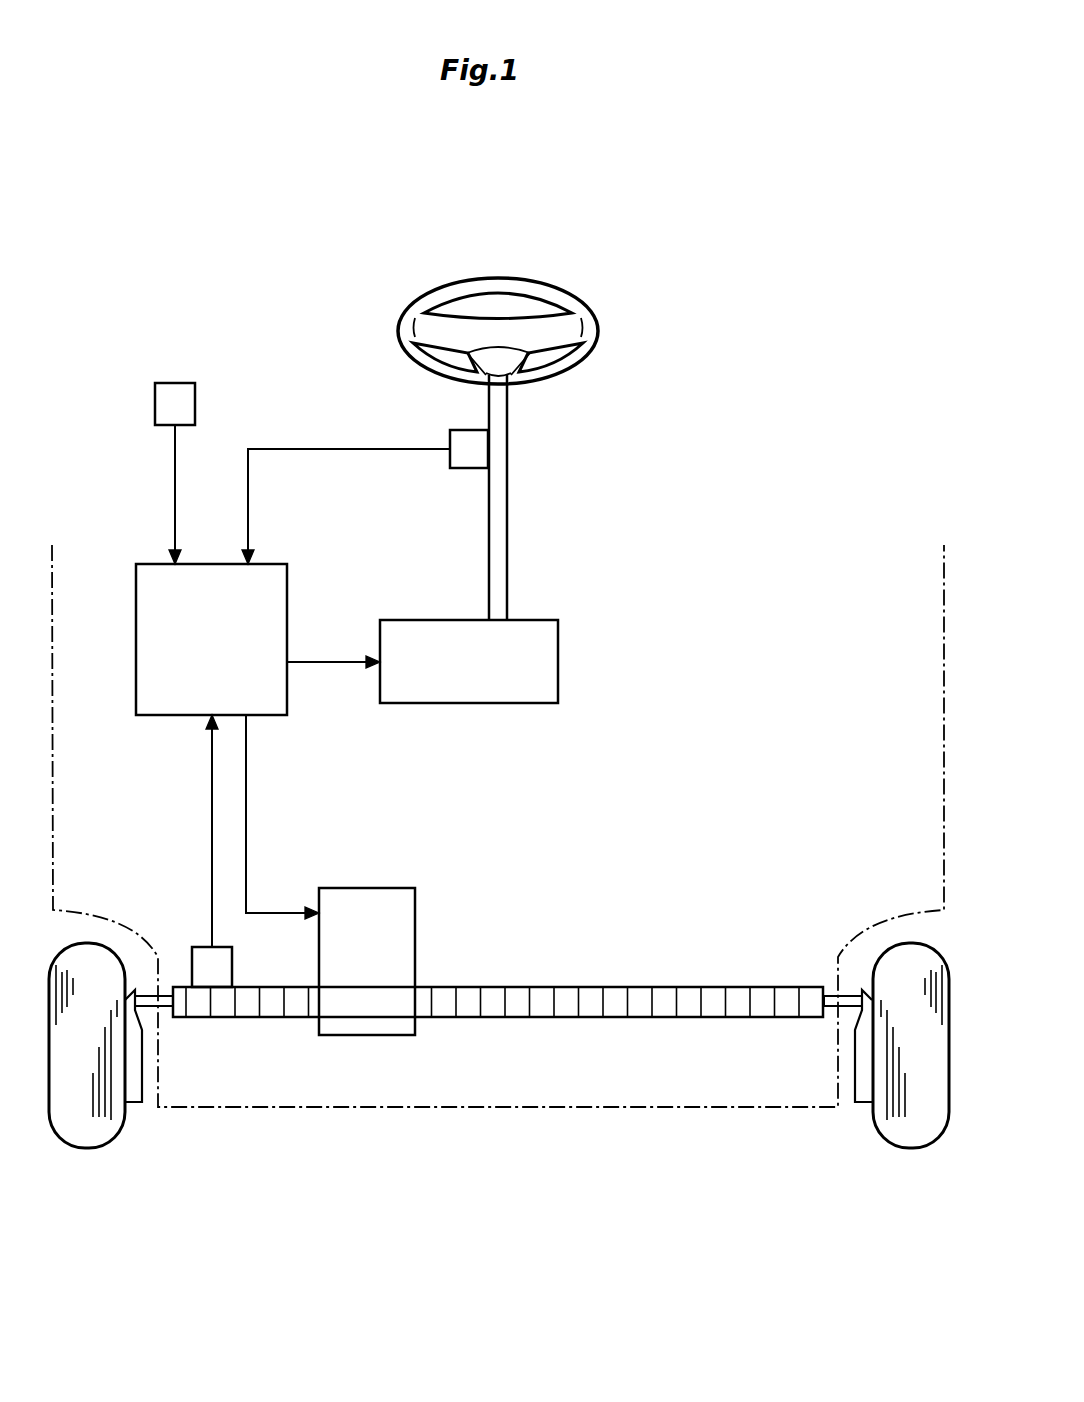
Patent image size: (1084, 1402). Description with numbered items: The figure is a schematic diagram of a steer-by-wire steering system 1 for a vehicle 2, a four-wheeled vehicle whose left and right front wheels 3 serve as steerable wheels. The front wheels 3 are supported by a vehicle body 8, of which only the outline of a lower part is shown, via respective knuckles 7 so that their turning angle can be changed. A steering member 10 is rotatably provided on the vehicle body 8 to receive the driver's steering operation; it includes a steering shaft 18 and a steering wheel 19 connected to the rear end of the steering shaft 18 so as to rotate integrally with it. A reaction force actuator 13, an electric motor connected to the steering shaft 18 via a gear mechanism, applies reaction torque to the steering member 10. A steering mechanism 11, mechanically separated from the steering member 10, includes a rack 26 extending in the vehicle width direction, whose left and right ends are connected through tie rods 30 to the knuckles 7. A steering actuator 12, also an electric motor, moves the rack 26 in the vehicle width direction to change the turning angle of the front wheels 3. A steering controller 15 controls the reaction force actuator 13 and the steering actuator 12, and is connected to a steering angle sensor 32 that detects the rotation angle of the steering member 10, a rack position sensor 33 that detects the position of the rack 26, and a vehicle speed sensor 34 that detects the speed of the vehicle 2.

The steering system 1 is at (382, 289).
The vehicle 2 is at (387, 191).
The front wheels 3 is at (82, 1147).
The knuckles 7 is at (135, 1103).
The vehicle body 8 is at (722, 1108).
The steering member 10 is at (548, 319).
The steering mechanism 11 is at (498, 1026).
The steering actuator 12 is at (367, 992).
The reaction force actuator 13 is at (558, 648).
The steering controller 15 is at (168, 715).
The steering shaft 18 is at (507, 473).
The steering wheel 19 is at (575, 372).
The rack 26 is at (640, 1017).
The tie rods 30 is at (160, 1008).
The steering angle sensor 32 is at (456, 430).
The rack position sensor 33 is at (204, 947).
The vehicle speed sensor 34 is at (180, 383).